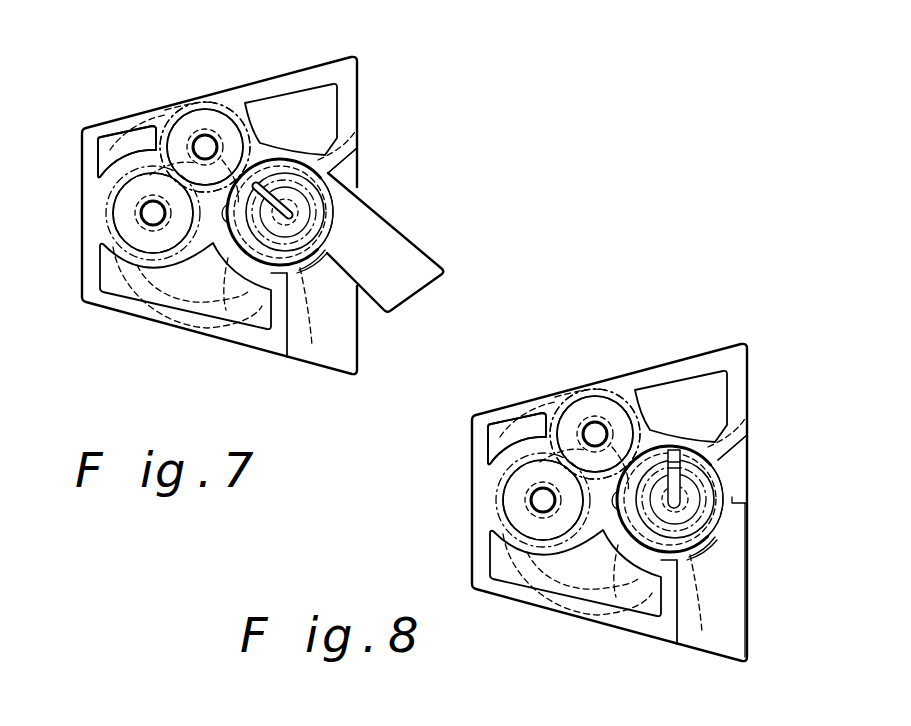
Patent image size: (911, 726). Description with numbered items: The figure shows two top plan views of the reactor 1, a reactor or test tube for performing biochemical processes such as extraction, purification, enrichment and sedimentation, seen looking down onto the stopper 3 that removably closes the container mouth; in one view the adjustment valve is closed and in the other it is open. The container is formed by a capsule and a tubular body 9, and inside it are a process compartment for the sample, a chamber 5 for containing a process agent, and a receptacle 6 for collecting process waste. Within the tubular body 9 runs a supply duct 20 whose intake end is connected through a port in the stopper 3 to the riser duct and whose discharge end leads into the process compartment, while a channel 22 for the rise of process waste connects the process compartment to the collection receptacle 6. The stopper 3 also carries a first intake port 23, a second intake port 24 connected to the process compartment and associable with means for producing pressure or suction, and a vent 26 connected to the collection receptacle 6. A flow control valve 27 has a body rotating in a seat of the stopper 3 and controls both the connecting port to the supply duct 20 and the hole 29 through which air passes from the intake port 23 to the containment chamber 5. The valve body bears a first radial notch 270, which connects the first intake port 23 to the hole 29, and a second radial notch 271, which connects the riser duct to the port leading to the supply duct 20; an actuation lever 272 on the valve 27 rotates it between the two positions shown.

In FIG. 7, the reactor 1 is at (518, 93).
In FIG. 8, the reactor 1 is at (752, 260).
In FIG. 7, the stopper 3 is at (372, 88).
In FIG. 8, the stopper 3 is at (762, 392).
In FIG. 7, the chamber 5 is at (301, 345).
In FIG. 8, the chamber 5 is at (693, 642).
In FIG. 7, the receptacle 6 is at (127, 326).
In FIG. 8, the receptacle 6 is at (518, 612).
In FIG. 7, the tubular body 9 is at (175, 323).
In FIG. 8, the tubular body 9 is at (565, 612).
In FIG. 7, the supply duct 20 is at (228, 91).
In FIG. 8, the supply duct 20 is at (618, 378).
In FIG. 7, the channel 22 is at (137, 120).
In FIG. 8, the channel 22 is at (527, 403).
In FIG. 7, the first intake port 23 is at (336, 216).
In FIG. 8, the first intake port 23 is at (752, 504).
In FIG. 7, the second intake port 24 is at (150, 213).
In FIG. 8, the second intake port 24 is at (540, 500).
In FIG. 7, the vent 26 is at (203, 145).
In FIG. 8, the vent 26 is at (593, 432).
In FIG. 7, the flow control valve 27 is at (457, 272).
In FIG. 8, the flow control valve 27 is at (742, 581).
In FIG. 7, the hole 29 is at (360, 149).
In FIG. 8, the hole 29 is at (752, 441).
In FIG. 7, the first radial notch 270 is at (256, 184).
In FIG. 8, the first radial notch 270 is at (662, 450).
In FIG. 7, the second radial notch 271 is at (245, 334).
In FIG. 8, the second radial notch 271 is at (633, 622).
In FIG. 7, the actuation lever 272 is at (407, 252).
In FIG. 8, the actuation lever 272 is at (732, 607).